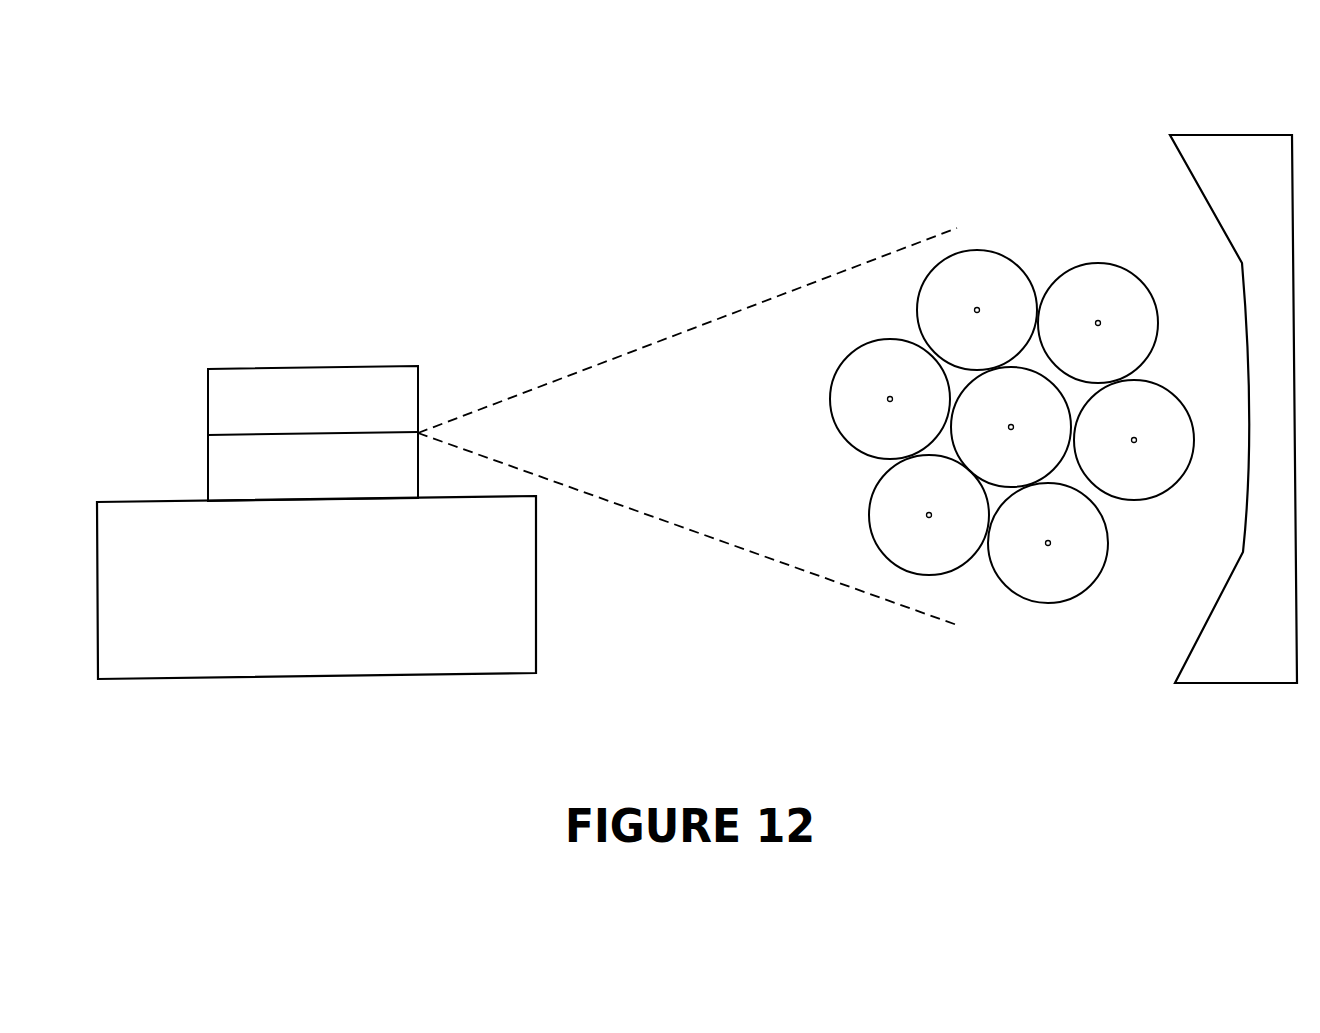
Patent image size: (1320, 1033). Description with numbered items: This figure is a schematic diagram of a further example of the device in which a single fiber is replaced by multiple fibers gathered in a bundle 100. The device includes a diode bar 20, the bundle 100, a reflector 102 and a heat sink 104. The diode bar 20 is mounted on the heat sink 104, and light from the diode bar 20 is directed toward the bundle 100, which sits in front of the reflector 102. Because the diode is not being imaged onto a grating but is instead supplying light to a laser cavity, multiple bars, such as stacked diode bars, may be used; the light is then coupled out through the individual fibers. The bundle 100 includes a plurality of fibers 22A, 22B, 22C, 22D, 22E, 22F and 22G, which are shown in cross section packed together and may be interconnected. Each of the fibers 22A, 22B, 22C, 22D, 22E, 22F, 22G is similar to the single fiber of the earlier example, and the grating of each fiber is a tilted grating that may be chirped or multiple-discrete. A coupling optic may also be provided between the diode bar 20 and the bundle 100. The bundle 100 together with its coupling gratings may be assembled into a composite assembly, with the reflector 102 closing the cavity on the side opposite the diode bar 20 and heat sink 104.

The diode bar 20 is at (180, 428).
The heat sink 104 is at (547, 623).
The reflector 102 is at (1237, 117).
The fiber bundle 100 is at (982, 461).
The fiber 22A is at (855, 507).
The fiber 22B is at (817, 383).
The fiber 22C is at (927, 270).
The fiber 22D is at (1050, 297).
The fiber 22E is at (1052, 393).
The fiber 22F is at (1080, 593).
The fiber 22G is at (1152, 508).